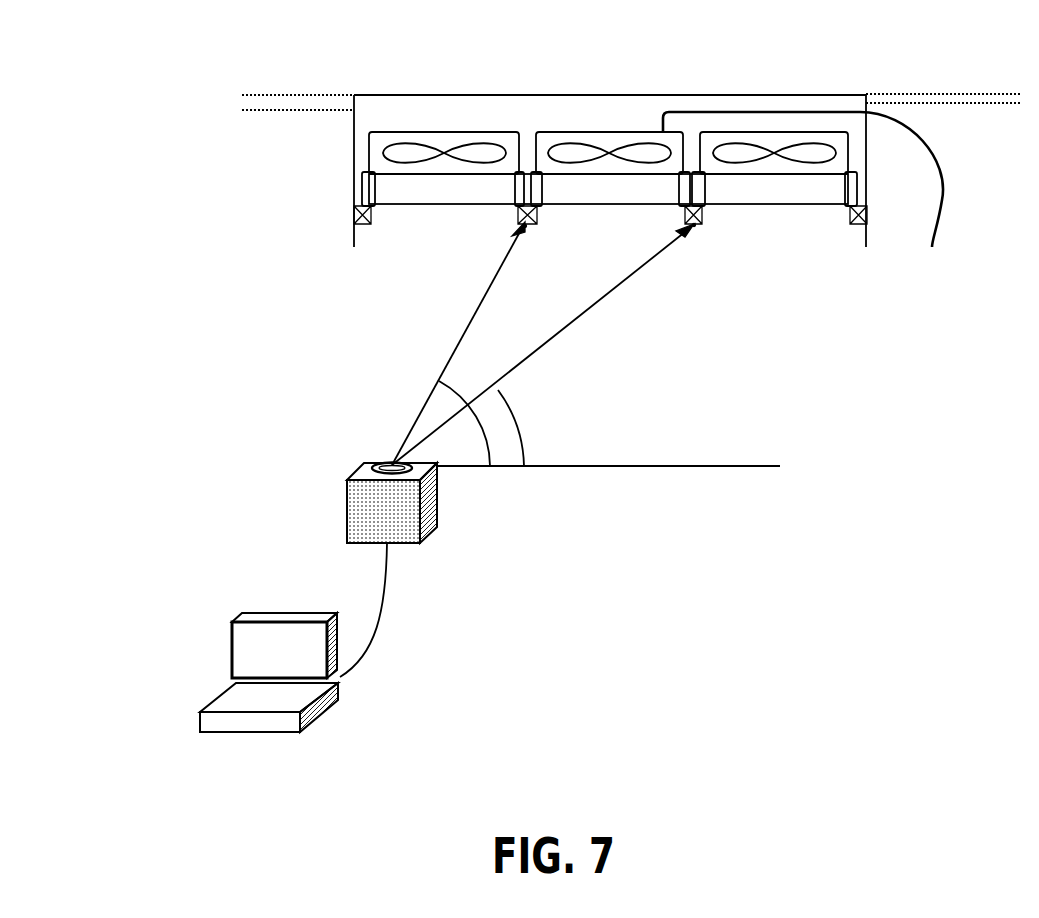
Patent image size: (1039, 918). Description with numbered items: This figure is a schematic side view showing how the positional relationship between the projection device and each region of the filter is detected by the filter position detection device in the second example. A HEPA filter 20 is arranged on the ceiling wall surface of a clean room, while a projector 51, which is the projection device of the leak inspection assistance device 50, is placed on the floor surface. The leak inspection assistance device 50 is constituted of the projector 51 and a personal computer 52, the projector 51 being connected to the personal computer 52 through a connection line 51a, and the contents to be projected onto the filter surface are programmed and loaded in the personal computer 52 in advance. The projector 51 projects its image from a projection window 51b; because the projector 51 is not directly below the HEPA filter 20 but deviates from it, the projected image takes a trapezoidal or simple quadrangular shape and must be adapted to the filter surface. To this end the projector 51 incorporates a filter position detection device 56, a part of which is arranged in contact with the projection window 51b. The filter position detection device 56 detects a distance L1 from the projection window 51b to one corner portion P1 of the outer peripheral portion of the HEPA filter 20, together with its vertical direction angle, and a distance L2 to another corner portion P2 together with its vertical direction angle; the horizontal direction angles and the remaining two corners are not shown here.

The HEPA filter 20 is at (587, 187).
The leak inspection assistance device 50 is at (236, 528).
The projector 51 is at (383, 507).
The connection line 51a is at (380, 592).
The projection window 51b is at (358, 467).
The personal computer 52 is at (252, 648).
The filter position detection device 56 is at (387, 462).
The distance L1 is at (455, 342).
The distance L2 is at (540, 345).
The corner portion P1 is at (529, 230).
The corner portion P2 is at (700, 225).